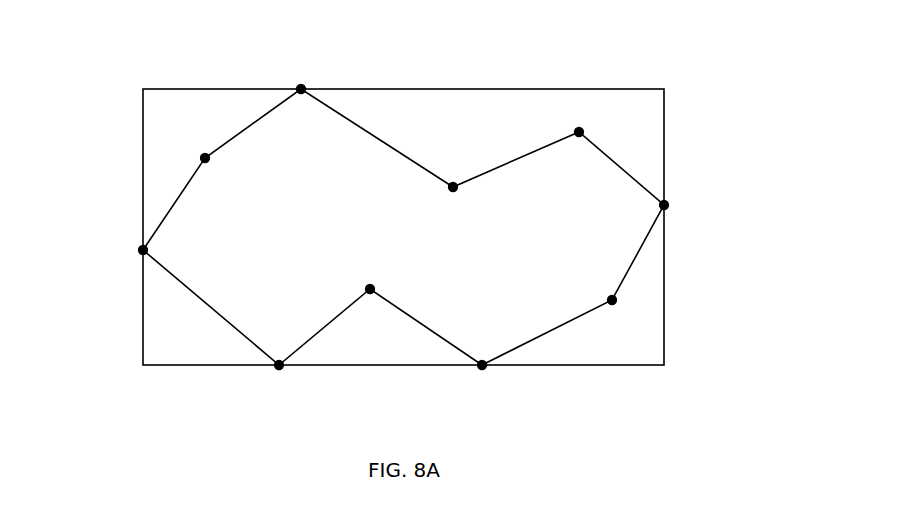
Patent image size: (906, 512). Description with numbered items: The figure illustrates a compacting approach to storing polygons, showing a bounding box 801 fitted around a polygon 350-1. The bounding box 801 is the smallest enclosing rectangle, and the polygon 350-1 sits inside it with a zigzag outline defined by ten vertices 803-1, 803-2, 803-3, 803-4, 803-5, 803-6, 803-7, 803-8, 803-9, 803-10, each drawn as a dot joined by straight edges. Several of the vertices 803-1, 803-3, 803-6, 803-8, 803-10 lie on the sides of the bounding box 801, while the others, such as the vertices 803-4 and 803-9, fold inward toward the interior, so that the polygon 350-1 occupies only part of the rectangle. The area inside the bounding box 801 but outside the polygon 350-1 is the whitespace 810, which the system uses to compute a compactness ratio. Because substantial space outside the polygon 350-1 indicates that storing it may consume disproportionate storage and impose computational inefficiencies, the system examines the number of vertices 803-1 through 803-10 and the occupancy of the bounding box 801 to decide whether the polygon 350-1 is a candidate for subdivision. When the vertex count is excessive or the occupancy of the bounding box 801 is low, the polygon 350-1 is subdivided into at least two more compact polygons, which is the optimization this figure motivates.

The bounding box 801 is at (462, 89).
The whitespace 810 is at (458, 128).
The polygon 350-1 is at (257, 122).
The vertex 803-1 is at (143, 250).
The vertex 803-2 is at (205, 158).
The vertex 803-3 is at (301, 89).
The vertex 803-4 is at (453, 187).
The vertex 803-5 is at (579, 132).
The vertex 803-6 is at (664, 205).
The vertex 803-7 is at (612, 300).
The vertex 803-8 is at (482, 365).
The vertex 803-9 is at (370, 289).
The vertex 803-10 is at (279, 365).